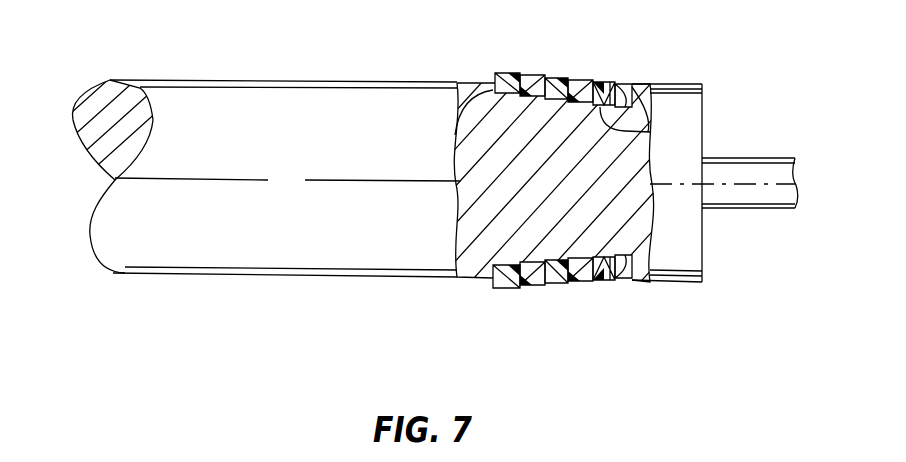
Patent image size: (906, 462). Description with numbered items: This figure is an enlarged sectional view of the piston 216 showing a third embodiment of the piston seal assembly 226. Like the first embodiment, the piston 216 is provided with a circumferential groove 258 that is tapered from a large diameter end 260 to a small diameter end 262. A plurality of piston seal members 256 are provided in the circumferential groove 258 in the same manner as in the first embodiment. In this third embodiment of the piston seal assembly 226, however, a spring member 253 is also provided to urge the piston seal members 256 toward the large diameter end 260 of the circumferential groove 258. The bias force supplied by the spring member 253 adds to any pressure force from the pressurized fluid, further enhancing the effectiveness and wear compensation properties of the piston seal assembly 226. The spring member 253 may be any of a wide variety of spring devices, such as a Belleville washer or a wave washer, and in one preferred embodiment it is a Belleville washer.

The piston 216 is at (210, 76).
The third embodiment of the piston seal assembly 226 is at (498, 72).
The spring member 253 is at (622, 82).
The piston seal members 256 is at (555, 285).
The circumferential groove 258 is at (600, 132).
The large diameter end 260 is at (458, 103).
The small diameter end 262 is at (638, 277).